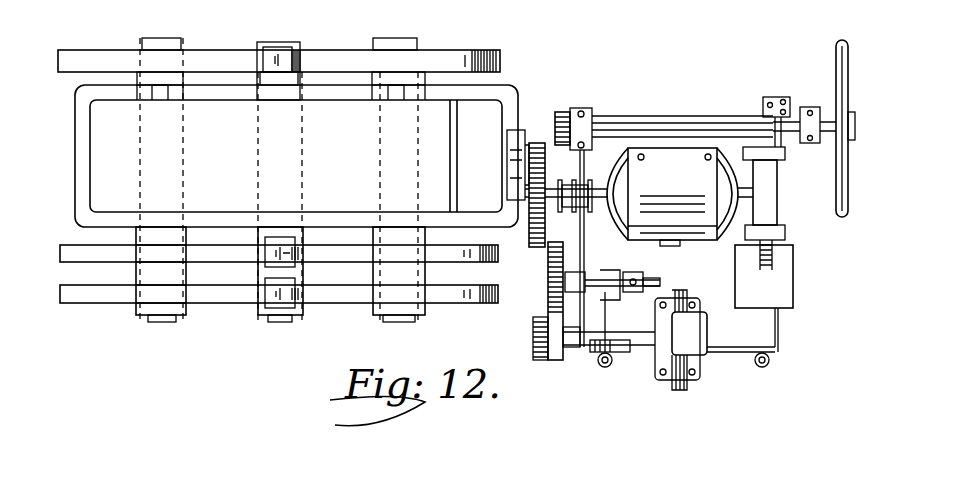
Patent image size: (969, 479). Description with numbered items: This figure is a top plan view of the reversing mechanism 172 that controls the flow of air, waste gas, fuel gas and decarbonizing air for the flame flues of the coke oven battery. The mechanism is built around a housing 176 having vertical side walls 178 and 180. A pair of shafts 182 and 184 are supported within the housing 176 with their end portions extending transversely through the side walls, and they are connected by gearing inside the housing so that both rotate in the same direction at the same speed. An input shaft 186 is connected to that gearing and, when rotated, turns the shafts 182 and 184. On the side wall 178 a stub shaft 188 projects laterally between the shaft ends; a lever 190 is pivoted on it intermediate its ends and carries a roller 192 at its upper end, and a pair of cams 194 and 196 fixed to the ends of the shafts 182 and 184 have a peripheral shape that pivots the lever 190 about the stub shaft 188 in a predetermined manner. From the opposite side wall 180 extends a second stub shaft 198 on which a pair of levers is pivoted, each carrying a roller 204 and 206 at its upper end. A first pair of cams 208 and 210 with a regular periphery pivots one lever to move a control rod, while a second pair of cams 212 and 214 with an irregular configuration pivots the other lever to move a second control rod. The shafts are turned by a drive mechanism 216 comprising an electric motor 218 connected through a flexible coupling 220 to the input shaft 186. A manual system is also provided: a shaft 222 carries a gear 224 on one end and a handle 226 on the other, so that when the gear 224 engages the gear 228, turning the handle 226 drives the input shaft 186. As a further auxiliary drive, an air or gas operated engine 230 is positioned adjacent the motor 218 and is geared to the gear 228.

The reversing mechanism 172 is at (519, 58).
The housing 176 is at (298, 160).
The vertical side wall 178 is at (340, 97).
The vertical side wall 180 is at (342, 203).
The shaft 182 is at (378, 168).
The shaft 184 is at (137, 170).
The input shaft 186 is at (548, 198).
The stub shaft 188 is at (295, 47).
The lever 190 is at (259, 45).
The roller 192 is at (283, 50).
The cam 194 is at (470, 50).
The cam 196 is at (217, 58).
The second stub shaft 198 is at (163, 322).
The roller 204 is at (297, 252).
The roller 206 is at (300, 295).
The cam 208 is at (452, 256).
The cam 210 is at (72, 250).
The cam 212 is at (450, 297).
The cam 214 is at (94, 293).
The drive mechanism 216 is at (667, 96).
The electric motor 218 is at (697, 185).
The flexible coupling 220 is at (582, 180).
The shaft 222 is at (692, 118).
The gear 224 is at (562, 112).
The handle 226 is at (838, 60).
The gear 228 is at (695, 257).
The air or gas operated engine 230 is at (700, 338).